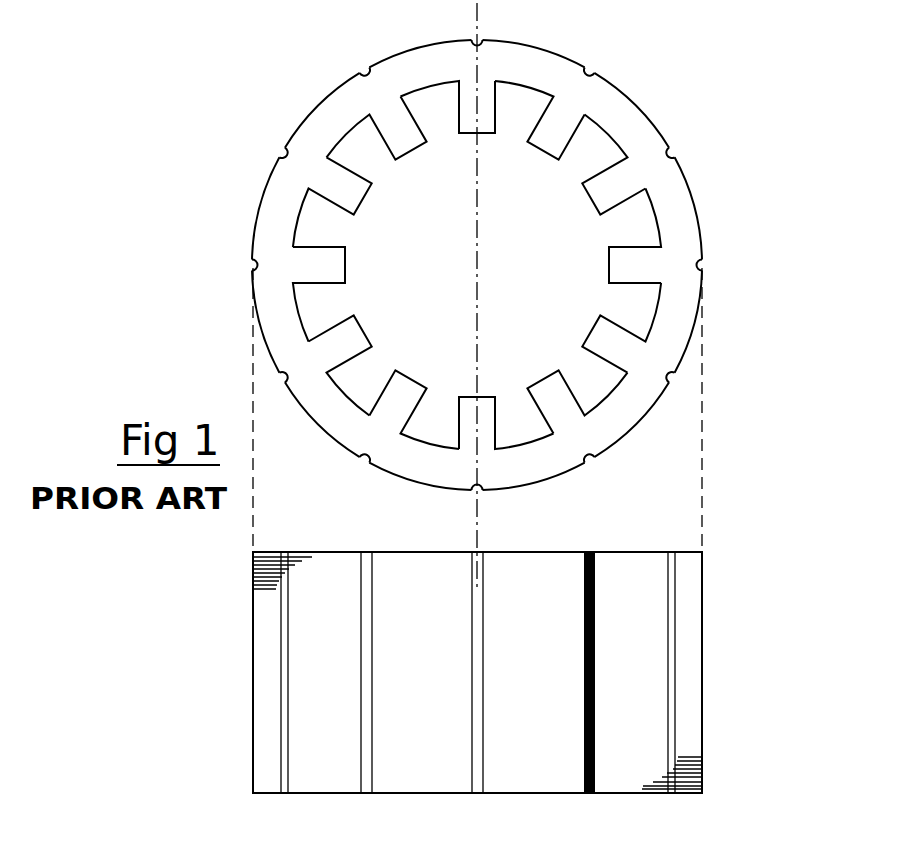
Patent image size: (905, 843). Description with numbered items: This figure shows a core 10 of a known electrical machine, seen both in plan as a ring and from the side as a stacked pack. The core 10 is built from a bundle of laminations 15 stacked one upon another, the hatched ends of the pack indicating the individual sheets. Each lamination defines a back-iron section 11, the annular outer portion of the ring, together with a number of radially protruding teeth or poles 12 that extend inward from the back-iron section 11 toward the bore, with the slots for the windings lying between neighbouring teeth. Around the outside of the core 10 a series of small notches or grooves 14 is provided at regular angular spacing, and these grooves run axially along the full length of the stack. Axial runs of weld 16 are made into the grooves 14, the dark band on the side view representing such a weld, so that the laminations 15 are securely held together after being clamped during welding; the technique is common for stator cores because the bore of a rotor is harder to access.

The core 10 is at (670, 395).
The back-iron section 11 is at (616, 122).
The teeth or poles 12 is at (627, 182).
The notches or grooves 14 is at (587, 65).
The laminations 15 is at (253, 565).
The weld 16 is at (595, 637).